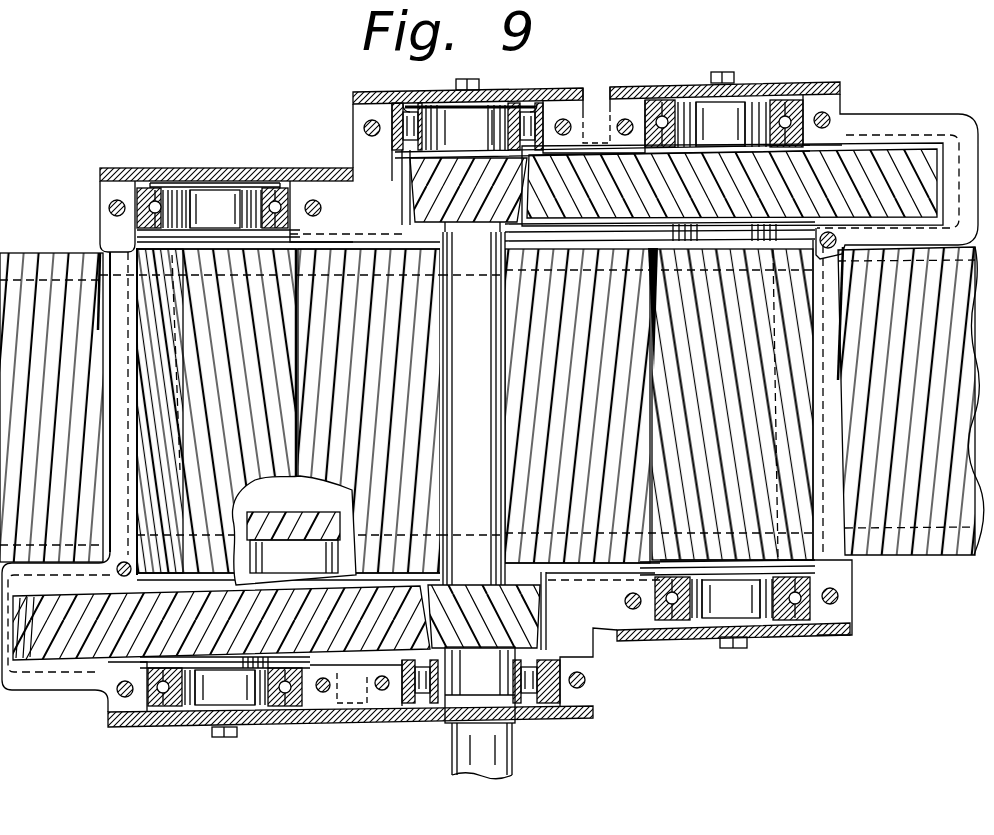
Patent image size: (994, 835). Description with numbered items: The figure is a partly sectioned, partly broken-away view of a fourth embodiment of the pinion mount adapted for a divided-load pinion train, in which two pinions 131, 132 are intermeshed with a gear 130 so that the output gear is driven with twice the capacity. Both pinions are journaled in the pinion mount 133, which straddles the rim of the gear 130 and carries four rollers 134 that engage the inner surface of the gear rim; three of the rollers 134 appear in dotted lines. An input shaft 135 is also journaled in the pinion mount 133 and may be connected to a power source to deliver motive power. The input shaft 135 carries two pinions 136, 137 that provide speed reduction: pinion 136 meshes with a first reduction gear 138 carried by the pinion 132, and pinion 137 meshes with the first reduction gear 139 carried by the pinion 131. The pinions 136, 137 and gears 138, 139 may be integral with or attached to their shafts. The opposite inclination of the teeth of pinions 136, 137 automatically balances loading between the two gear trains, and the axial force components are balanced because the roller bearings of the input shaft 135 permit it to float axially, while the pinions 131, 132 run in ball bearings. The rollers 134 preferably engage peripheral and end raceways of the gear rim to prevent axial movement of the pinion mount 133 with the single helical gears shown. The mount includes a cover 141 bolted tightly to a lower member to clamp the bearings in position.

The gear 130 is at (47, 262).
The pinion 131 is at (722, 613).
The pinion 132 is at (192, 196).
The pinion mount 133 is at (578, 658).
The rollers 134 is at (343, 234).
The input shaft 135 is at (486, 486).
The pinion 136 is at (532, 622).
The pinion 137 is at (410, 184).
The first reduction gear 138 is at (67, 657).
The first reduction gear 139 is at (893, 166).
The cover 141 is at (842, 607).